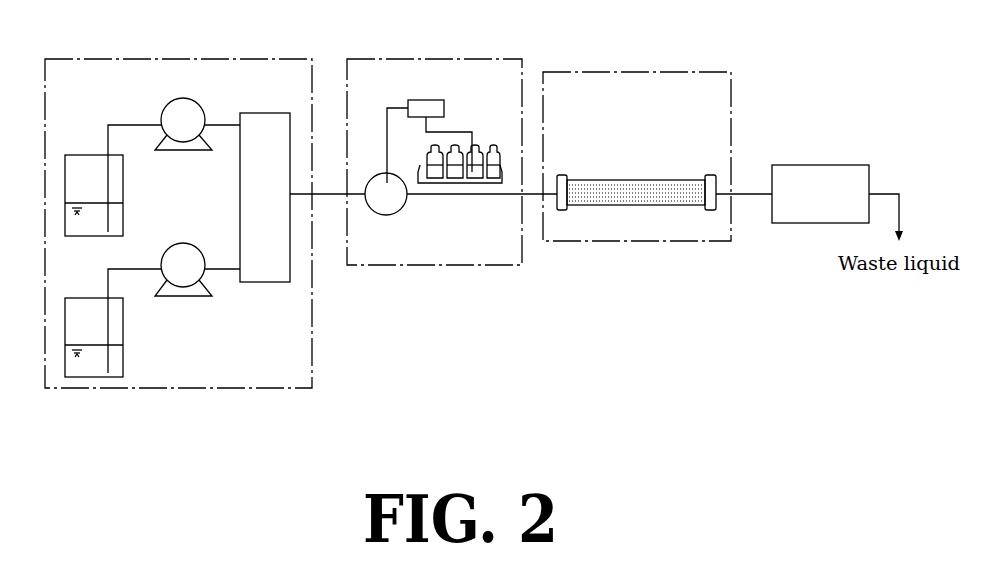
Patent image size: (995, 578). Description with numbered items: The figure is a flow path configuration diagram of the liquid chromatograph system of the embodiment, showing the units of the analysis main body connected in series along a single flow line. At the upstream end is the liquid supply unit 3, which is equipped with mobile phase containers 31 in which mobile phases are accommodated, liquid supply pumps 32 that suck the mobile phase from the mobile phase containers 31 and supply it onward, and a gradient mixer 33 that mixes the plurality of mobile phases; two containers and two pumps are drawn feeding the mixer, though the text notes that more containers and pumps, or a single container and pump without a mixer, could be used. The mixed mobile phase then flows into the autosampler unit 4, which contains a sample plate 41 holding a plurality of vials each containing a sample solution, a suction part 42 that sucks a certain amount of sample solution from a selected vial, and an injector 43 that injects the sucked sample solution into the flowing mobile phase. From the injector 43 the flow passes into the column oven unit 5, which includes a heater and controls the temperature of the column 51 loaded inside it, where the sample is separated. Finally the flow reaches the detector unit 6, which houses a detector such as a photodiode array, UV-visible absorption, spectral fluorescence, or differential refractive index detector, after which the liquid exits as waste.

The liquid supply unit 3 is at (118, 58).
The mobile phase container 31 is at (78, 155).
The liquid supply pump 32 is at (192, 151).
The gradient mixer 33 is at (266, 284).
The autosampler unit 4 is at (380, 58).
The sample plate 41 is at (489, 134).
The suction part 42 is at (442, 100).
The injector 43 is at (397, 212).
The column oven unit 5 is at (608, 71).
The column 51 is at (600, 180).
The detector unit 6 is at (807, 164).